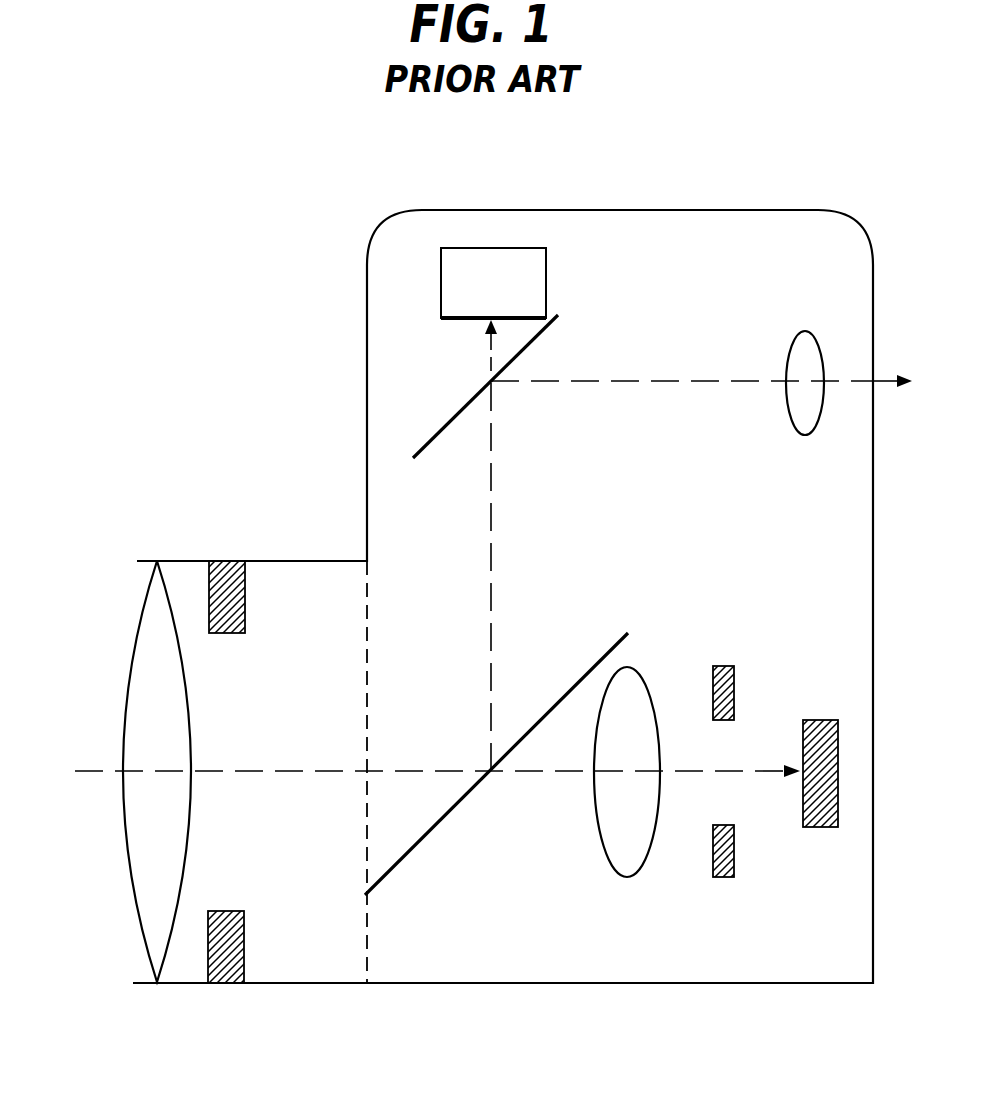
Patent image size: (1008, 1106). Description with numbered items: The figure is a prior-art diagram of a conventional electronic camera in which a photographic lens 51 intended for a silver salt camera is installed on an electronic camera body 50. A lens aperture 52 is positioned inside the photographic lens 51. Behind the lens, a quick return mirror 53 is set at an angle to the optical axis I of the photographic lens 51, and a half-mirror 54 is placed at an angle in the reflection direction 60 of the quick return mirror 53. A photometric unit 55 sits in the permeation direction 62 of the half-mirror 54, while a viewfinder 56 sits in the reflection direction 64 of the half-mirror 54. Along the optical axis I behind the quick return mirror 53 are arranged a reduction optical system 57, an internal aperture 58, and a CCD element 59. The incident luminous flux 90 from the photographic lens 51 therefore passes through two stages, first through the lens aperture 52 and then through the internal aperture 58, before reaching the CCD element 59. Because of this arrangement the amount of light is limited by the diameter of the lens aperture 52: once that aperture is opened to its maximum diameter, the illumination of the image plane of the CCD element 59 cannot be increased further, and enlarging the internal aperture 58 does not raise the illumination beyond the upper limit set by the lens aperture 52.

The electronic camera body 50 is at (442, 985).
The photographic lens 51 is at (150, 985).
The lens aperture 52 is at (235, 561).
The quick return mirror 53 is at (405, 855).
The half-mirror 54 is at (432, 437).
The photometric unit 55 is at (473, 292).
The viewfinder 56 is at (800, 332).
The reduction optical system 57 is at (627, 878).
The internal aperture 58 is at (722, 877).
The CCD element 59 is at (812, 720).
The reflection direction 60 is at (491, 477).
The permeation direction 62 is at (490, 345).
The reflection direction 64 is at (613, 381).
The incident luminous flux 90 is at (97, 768).
The optical axis I is at (157, 770).